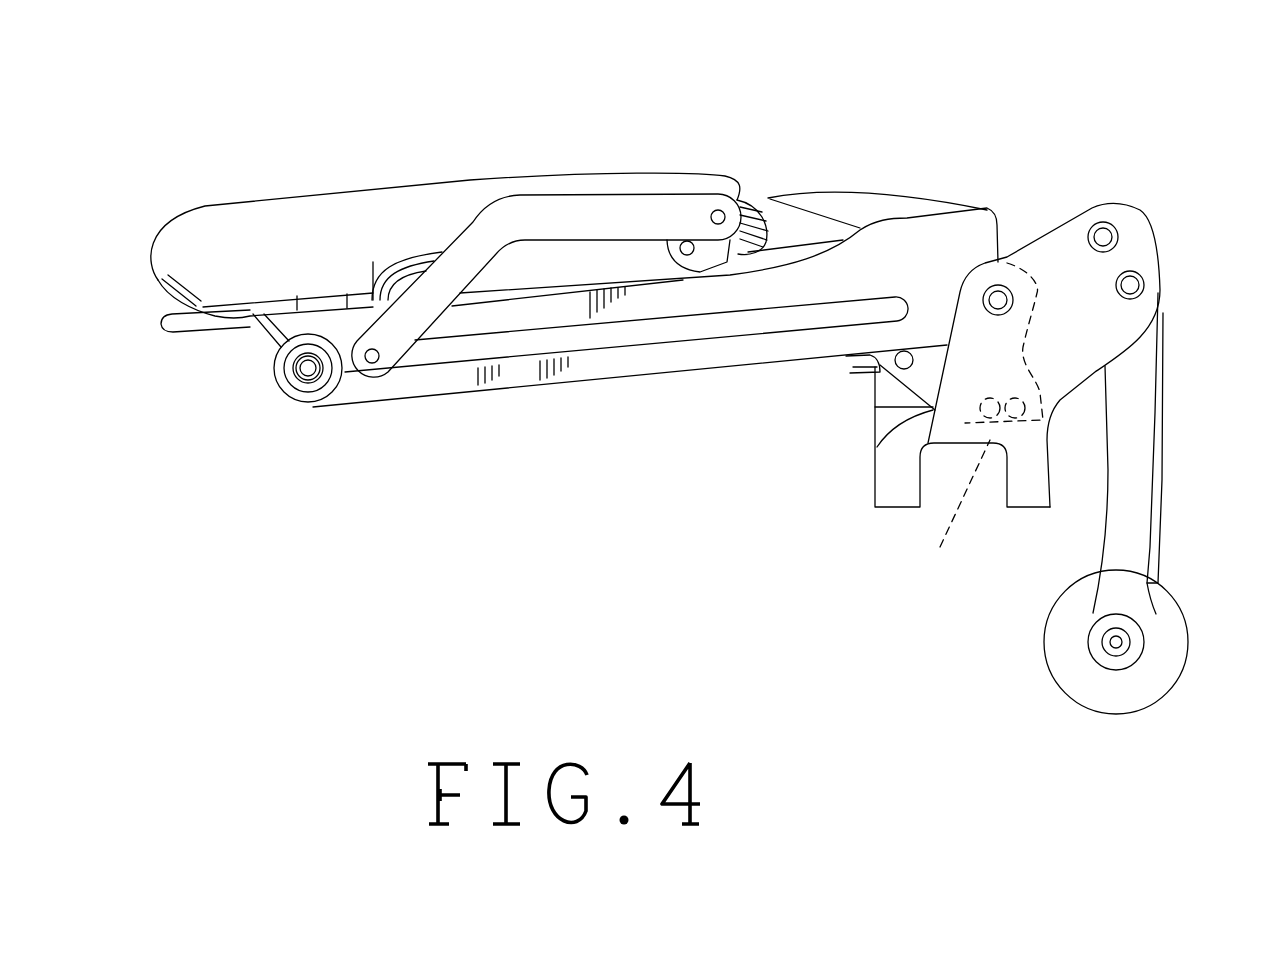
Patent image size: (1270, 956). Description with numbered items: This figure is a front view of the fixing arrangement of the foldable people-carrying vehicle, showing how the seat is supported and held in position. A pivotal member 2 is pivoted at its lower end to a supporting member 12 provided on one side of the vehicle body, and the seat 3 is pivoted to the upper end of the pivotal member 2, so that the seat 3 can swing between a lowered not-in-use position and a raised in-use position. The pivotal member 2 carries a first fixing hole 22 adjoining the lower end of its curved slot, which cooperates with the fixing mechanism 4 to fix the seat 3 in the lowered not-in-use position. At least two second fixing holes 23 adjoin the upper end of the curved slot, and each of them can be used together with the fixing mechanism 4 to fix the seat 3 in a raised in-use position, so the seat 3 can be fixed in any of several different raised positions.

The pivotal member 2 is at (590, 372).
The seat 3 is at (306, 200).
The fixing mechanism 4 is at (182, 331).
The supporting member 12 is at (1133, 257).
The first fixing hole 22 is at (897, 365).
The second fixing hole 23 is at (975, 447).